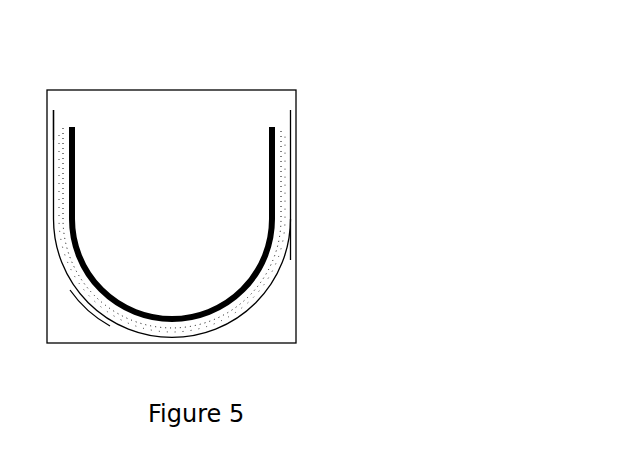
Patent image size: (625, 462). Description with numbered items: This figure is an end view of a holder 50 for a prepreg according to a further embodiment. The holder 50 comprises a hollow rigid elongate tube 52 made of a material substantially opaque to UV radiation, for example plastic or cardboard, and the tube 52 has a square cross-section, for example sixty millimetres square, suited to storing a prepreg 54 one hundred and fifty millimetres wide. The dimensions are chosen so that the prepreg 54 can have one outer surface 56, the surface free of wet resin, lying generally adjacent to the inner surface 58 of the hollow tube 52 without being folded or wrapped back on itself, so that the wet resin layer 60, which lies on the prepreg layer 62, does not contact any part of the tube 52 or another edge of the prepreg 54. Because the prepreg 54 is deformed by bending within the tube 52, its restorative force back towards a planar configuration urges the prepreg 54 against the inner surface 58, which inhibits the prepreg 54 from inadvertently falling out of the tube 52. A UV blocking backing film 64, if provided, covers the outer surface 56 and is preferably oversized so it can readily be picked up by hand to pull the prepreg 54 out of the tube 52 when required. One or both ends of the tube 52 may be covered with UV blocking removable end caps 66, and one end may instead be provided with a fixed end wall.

The holder 50 is at (297, 268).
The hollow rigid elongate tube 52 is at (296, 109).
The prepreg 54 is at (296, 181).
The outer surface 56 is at (92, 302).
The inner surface 58 is at (297, 293).
The wet resin layer 60 is at (72, 183).
The prepreg layer 62 is at (63, 152).
The UV blocking backing film 64 is at (53, 118).
The UV blocking removable end caps 66 is at (205, 120).